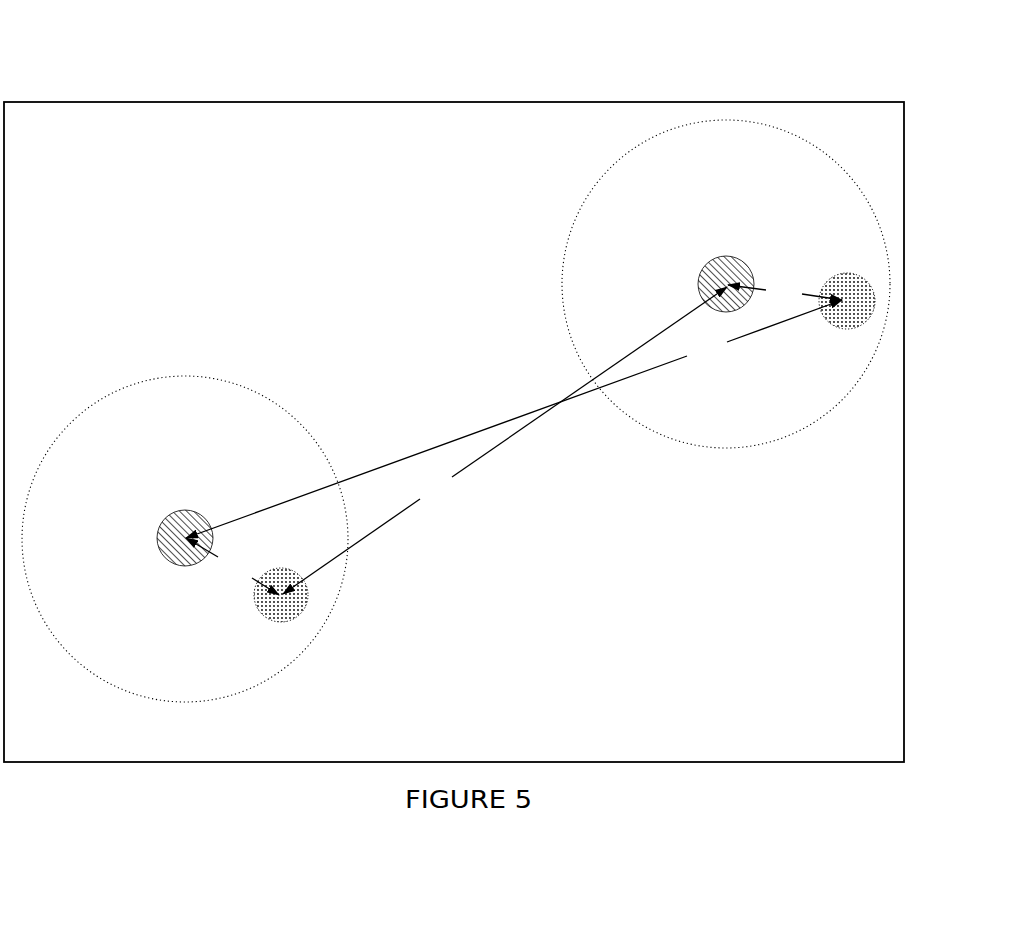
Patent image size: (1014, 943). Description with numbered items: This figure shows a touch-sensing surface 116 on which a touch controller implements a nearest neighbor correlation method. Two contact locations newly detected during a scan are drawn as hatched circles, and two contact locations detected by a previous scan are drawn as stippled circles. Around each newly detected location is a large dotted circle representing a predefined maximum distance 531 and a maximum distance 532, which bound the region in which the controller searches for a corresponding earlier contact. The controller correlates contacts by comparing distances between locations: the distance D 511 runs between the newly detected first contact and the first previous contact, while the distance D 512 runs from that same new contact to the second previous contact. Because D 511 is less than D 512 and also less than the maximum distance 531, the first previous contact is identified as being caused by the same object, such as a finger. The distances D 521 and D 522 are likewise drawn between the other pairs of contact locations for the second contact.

The touch-sensing surface 116 is at (952, 126).
The maximum distance 531 is at (78, 425).
The maximum distance 532 is at (622, 170).
The distance D511 511 is at (232, 566).
The distance D512 512 is at (514, 419).
The distance D521 521 is at (505, 440).
The distance D522 522 is at (785, 291).